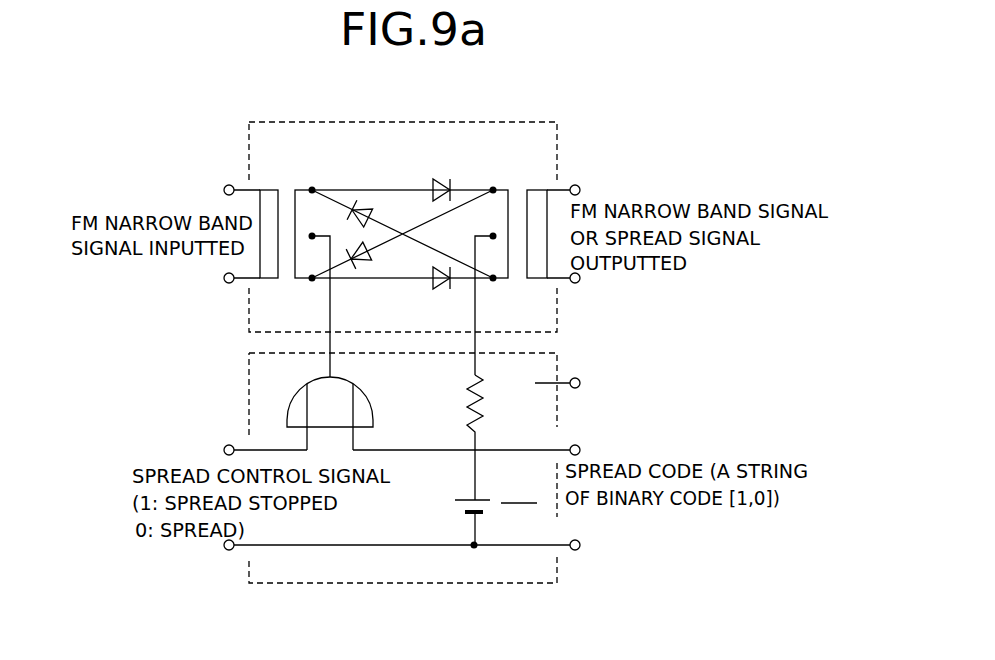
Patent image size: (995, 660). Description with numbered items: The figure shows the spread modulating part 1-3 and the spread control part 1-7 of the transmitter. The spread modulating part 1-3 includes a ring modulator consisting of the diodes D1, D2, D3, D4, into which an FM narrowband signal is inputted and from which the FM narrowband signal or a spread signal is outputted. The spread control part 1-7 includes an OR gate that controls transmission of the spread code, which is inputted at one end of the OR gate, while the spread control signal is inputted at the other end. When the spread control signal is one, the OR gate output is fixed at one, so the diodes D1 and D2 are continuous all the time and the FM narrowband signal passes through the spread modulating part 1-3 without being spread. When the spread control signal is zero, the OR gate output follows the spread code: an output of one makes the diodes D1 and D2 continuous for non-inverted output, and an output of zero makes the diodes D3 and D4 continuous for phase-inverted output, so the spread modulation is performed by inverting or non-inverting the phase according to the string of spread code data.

The spread modulating part 1-3 is at (402, 225).
The spread control part 1-7 is at (421, 493).
The diode D1 is at (455, 183).
The diode D2 is at (445, 292).
The diode D3 is at (360, 197).
The diode D4 is at (358, 274).